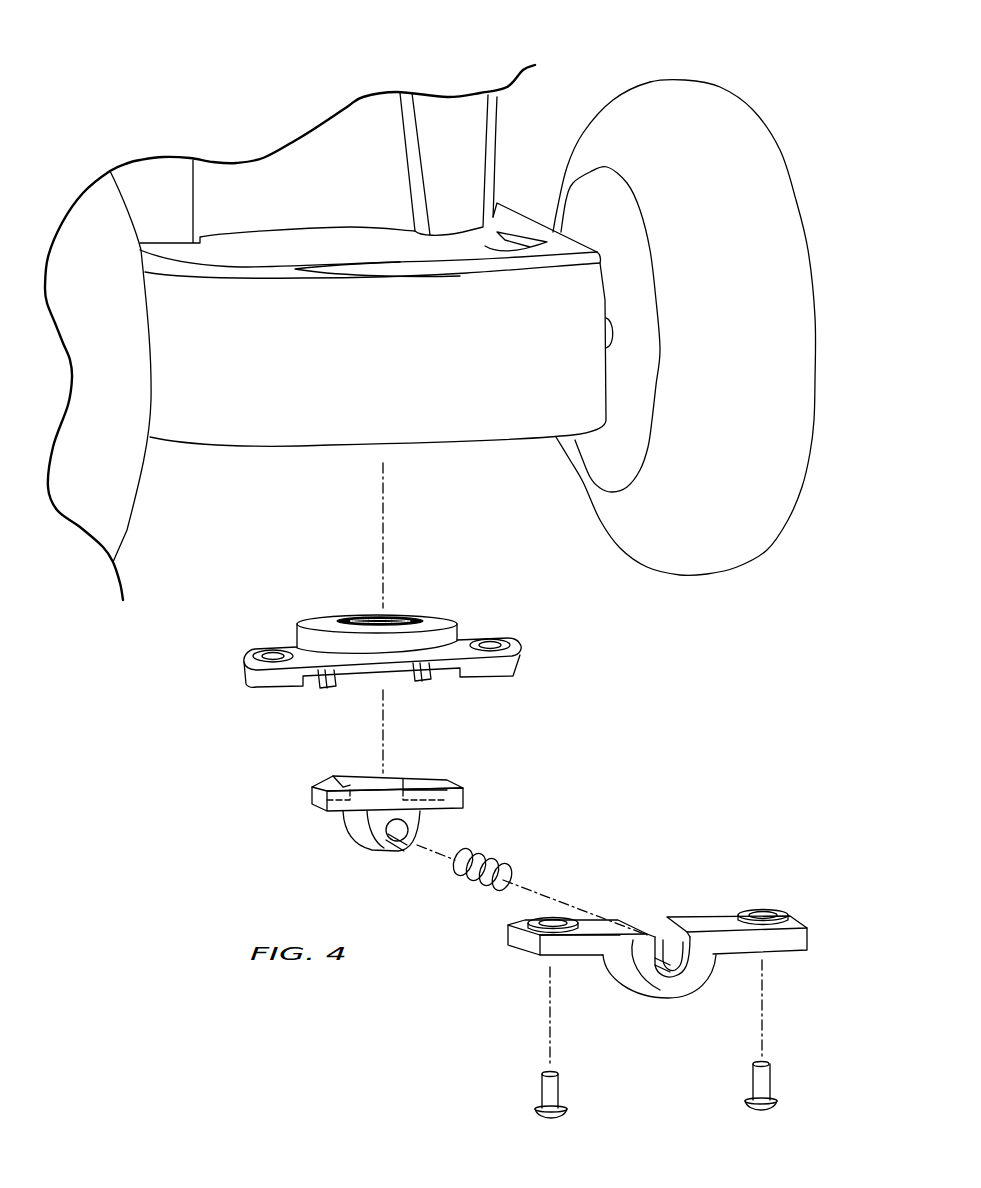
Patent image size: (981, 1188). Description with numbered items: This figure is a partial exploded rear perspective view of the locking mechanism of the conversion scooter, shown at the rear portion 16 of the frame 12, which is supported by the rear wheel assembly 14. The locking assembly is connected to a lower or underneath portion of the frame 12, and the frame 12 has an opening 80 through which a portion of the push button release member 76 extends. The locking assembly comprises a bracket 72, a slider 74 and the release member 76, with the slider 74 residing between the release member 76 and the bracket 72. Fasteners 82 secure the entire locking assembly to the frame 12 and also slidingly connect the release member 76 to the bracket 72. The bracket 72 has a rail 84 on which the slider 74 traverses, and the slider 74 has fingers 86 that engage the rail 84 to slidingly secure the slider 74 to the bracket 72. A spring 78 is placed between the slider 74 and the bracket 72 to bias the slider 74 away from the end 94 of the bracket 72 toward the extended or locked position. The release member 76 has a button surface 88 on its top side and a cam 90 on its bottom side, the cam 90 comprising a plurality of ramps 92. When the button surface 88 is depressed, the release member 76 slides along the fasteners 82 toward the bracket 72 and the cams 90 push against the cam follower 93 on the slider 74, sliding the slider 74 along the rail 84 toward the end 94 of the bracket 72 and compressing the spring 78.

The frame 12 is at (455, 413).
The rear wheel assembly 14 is at (720, 540).
The rear portion 16 is at (330, 423).
The opening 80 is at (397, 272).
The button surface 88 is at (398, 617).
The release member 76 is at (253, 662).
The cam 90 is at (317, 683).
The ramps 92 is at (327, 677).
The cam follower 93 is at (333, 783).
The slider 74 is at (318, 805).
The fingers 86 is at (367, 830).
The spring 78 is at (497, 857).
The rail 84 is at (660, 940).
The bracket 72 is at (520, 942).
The end 94 is at (660, 973).
The fasteners 82 is at (550, 1090).